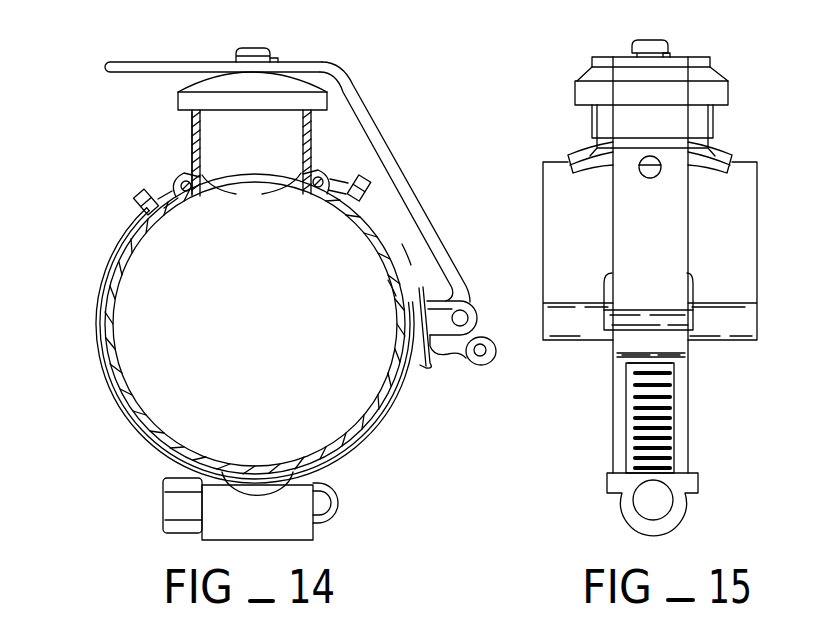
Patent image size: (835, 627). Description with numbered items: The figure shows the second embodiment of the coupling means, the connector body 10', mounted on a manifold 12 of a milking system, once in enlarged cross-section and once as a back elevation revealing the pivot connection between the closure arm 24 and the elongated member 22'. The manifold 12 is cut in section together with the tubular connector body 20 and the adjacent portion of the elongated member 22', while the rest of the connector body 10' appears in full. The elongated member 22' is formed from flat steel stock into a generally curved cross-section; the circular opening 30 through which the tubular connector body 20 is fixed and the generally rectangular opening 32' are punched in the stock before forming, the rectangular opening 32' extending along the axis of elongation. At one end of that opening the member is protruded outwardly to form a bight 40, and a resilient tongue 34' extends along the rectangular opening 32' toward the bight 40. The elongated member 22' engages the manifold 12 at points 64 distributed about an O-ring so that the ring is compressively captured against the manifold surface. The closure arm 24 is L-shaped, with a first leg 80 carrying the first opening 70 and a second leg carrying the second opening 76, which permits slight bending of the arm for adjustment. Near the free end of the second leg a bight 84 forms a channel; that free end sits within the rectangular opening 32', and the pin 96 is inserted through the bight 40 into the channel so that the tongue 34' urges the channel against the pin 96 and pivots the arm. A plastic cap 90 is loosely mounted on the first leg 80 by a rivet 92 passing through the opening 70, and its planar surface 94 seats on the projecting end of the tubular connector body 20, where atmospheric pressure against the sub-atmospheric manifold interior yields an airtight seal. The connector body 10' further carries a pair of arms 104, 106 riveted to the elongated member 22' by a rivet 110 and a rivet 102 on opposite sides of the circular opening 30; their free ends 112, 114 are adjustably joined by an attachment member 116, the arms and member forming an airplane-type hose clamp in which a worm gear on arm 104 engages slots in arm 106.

In FIG. 14, the connector body 10' is at (272, 276).
In FIG. 15, the connector body 10' is at (637, 269).
In FIG. 14, the manifold 12 is at (126, 366).
In FIG. 14, the tubular connector body 20 is at (190, 138).
In FIG. 15, the tubular connector body 20 is at (593, 122).
In FIG. 14, the elongated member 22' is at (367, 315).
In FIG. 15, the elongated member 22' is at (666, 261).
In FIG. 14, the closure arm 24 is at (413, 188).
In FIG. 15, the closure arm 24 is at (666, 247).
In FIG. 14, the circular opening 30 is at (236, 186).
In FIG. 15, the rectangular opening 32' is at (614, 347).
In FIG. 14, the tongue 34' is at (441, 230).
In FIG. 14, the bight 40 is at (478, 325).
In FIG. 15, the bight 40 is at (743, 313).
In FIG. 14, the points 64 is at (190, 198).
In FIG. 14, the first opening 70 is at (276, 60).
In FIG. 15, the first opening 70 is at (668, 55).
In FIG. 15, the second opening 76 is at (653, 156).
In FIG. 14, the first leg 80 is at (165, 62).
In FIG. 14, the bight 84 is at (484, 356).
In FIG. 14, the plastic cap 90 is at (175, 103).
In FIG. 15, the plastic cap 90 is at (577, 92).
In FIG. 14, the rivet 92 is at (241, 47).
In FIG. 15, the rivet 92 is at (647, 40).
In FIG. 14, the planar surface 94 is at (232, 112).
In FIG. 14, the pin 96 is at (466, 312).
In FIG. 15, the pin 96 is at (682, 330).
In FIG. 14, the rivet 102 is at (363, 176).
In FIG. 14, the arm 104 is at (98, 298).
In FIG. 14, the arm 106 is at (398, 402).
In FIG. 15, the arm 106 is at (690, 440).
In FIG. 14, the rivet 110 is at (138, 198).
In FIG. 14, the free end 112 is at (153, 453).
In FIG. 14, the free end 114 is at (316, 468).
In FIG. 14, the attachment member 116 is at (323, 530).
In FIG. 15, the attachment member 116 is at (698, 488).